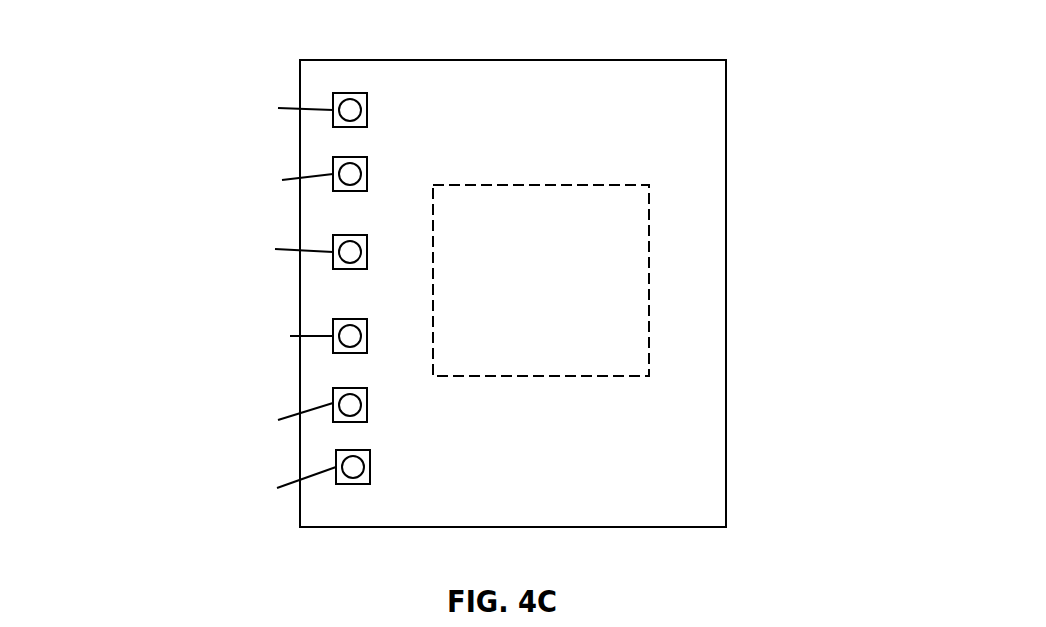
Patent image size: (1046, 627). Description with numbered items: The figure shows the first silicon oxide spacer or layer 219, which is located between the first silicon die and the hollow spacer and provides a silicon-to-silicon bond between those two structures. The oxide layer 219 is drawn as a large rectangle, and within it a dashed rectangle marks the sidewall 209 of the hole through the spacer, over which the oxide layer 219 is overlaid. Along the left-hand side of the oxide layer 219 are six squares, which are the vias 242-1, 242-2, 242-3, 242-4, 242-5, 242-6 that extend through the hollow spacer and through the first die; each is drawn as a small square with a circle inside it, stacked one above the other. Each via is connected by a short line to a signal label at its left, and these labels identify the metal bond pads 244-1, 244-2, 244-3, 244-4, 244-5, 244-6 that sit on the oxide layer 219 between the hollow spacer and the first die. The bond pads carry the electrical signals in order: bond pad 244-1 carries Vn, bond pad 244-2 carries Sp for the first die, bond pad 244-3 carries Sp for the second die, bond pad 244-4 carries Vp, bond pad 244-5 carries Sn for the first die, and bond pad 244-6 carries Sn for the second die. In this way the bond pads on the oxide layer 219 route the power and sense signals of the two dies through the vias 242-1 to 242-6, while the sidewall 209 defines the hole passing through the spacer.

The first silicon oxide spacer or layer 219 is at (815, 29).
The sidewall of the hole 209 is at (509, 378).
The via 242-1 is at (353, 108).
The via 242-2 is at (353, 172).
The via 242-3 is at (387, 233).
The via 242-4 is at (387, 318).
The via 242-5 is at (355, 409).
The via 242-6 is at (358, 471).
The metal bond pad 244-1 is at (235, 100).
The metal bond pad 244-2 is at (172, 173).
The metal bond pad 244-3 is at (148, 238).
The metal bond pad 244-4 is at (250, 333).
The metal bond pad 244-5 is at (167, 403).
The metal bond pad 244-6 is at (152, 483).